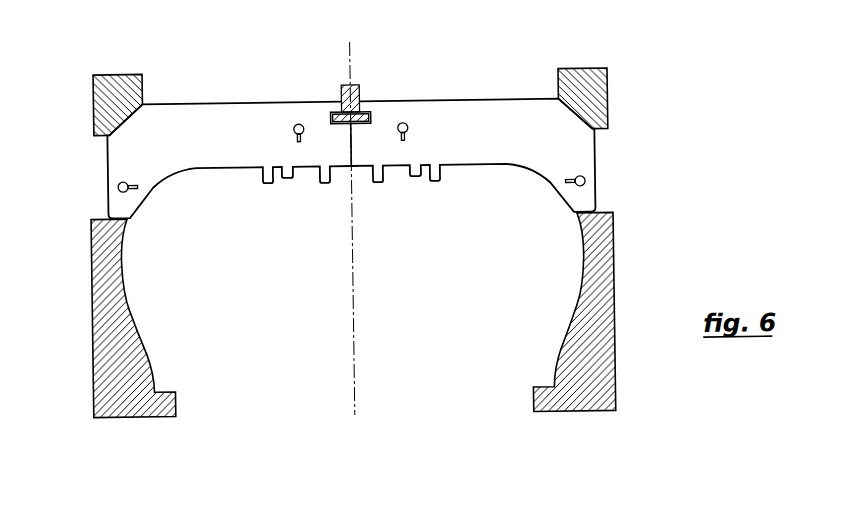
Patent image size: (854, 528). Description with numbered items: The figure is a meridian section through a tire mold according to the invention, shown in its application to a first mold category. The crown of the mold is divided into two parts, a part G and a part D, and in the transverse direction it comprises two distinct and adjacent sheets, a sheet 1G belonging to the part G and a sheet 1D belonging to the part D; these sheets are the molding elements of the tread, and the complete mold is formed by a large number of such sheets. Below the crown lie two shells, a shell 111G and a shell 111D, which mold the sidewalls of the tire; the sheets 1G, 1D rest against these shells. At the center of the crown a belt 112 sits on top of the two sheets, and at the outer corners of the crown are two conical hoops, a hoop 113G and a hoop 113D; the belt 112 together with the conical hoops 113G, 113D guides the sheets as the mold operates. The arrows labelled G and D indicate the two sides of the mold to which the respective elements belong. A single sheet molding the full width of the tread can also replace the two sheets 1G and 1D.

The sheet 1G is at (222, 118).
The sheet 1D is at (440, 125).
The belt 112 is at (342, 86).
The conical hoop 113G is at (95, 84).
The conical hoop 113D is at (602, 93).
The shell 111G is at (125, 333).
The shell 111D is at (580, 347).
The part of the crown G is at (269, 304).
The part of the crown D is at (419, 293).